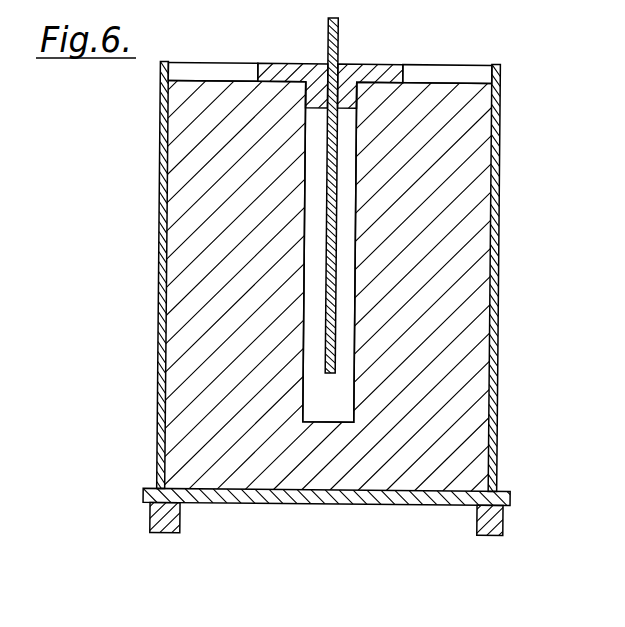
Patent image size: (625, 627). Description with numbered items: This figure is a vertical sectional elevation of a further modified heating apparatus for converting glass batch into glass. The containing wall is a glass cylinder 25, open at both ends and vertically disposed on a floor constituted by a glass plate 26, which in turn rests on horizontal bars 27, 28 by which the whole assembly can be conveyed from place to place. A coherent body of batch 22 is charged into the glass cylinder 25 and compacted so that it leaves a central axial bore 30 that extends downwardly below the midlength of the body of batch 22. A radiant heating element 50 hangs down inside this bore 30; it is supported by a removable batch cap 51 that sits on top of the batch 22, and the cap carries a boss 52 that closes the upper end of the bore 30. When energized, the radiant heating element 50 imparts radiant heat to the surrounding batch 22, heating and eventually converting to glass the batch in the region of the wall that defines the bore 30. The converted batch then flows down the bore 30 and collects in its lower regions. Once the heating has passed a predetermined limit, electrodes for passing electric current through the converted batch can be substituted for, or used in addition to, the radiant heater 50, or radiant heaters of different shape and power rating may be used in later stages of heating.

The batch 22 is at (233, 292).
The glass cylinder containing wall 25 is at (161, 382).
The glass plate 26 is at (343, 500).
The horizontal bar 27 is at (170, 522).
The horizontal bar 28 is at (492, 528).
The central axial bore 30 is at (303, 230).
The radiant heating element 50 is at (332, 185).
The removable batch cap 51 is at (292, 73).
The boss 52 is at (348, 100).